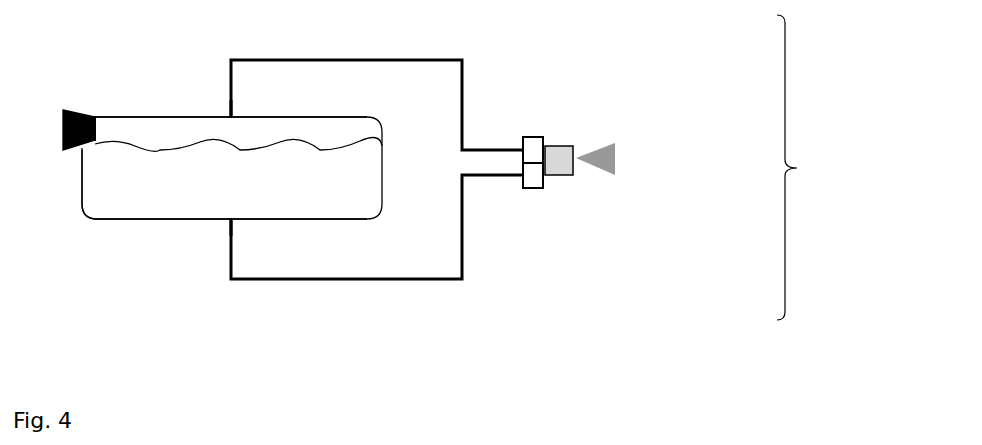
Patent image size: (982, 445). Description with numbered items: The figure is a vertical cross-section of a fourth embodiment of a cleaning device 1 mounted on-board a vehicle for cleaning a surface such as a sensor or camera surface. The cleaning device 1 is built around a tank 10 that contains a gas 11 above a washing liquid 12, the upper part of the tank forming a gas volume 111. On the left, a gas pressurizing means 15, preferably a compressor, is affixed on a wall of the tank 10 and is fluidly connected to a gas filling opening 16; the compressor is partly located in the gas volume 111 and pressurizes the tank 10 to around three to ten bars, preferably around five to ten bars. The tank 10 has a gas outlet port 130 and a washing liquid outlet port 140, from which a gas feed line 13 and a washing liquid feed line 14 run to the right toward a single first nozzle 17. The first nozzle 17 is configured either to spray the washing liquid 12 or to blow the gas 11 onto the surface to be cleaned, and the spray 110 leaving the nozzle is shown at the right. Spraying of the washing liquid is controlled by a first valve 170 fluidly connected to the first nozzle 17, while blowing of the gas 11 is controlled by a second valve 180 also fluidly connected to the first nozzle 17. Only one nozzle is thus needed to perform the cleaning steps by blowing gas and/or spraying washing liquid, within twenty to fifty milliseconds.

The cleaning device 1 is at (817, 167).
The tank 10 is at (378, 118).
The gas 11 is at (160, 125).
The gas volume 111 is at (299, 133).
The washing liquid 12 is at (119, 209).
The gas feed line 13 is at (336, 56).
The washing liquid feed line 14 is at (328, 285).
The gas outlet port 130 is at (223, 110).
The washing liquid outlet port 140 is at (226, 222).
The gas pressurizing means 15 is at (76, 108).
The gas filling opening 16 is at (96, 113).
The first nozzle 17 is at (582, 144).
The spray 110 is at (619, 140).
The first valve 170 is at (534, 191).
The second valve 180 is at (532, 133).